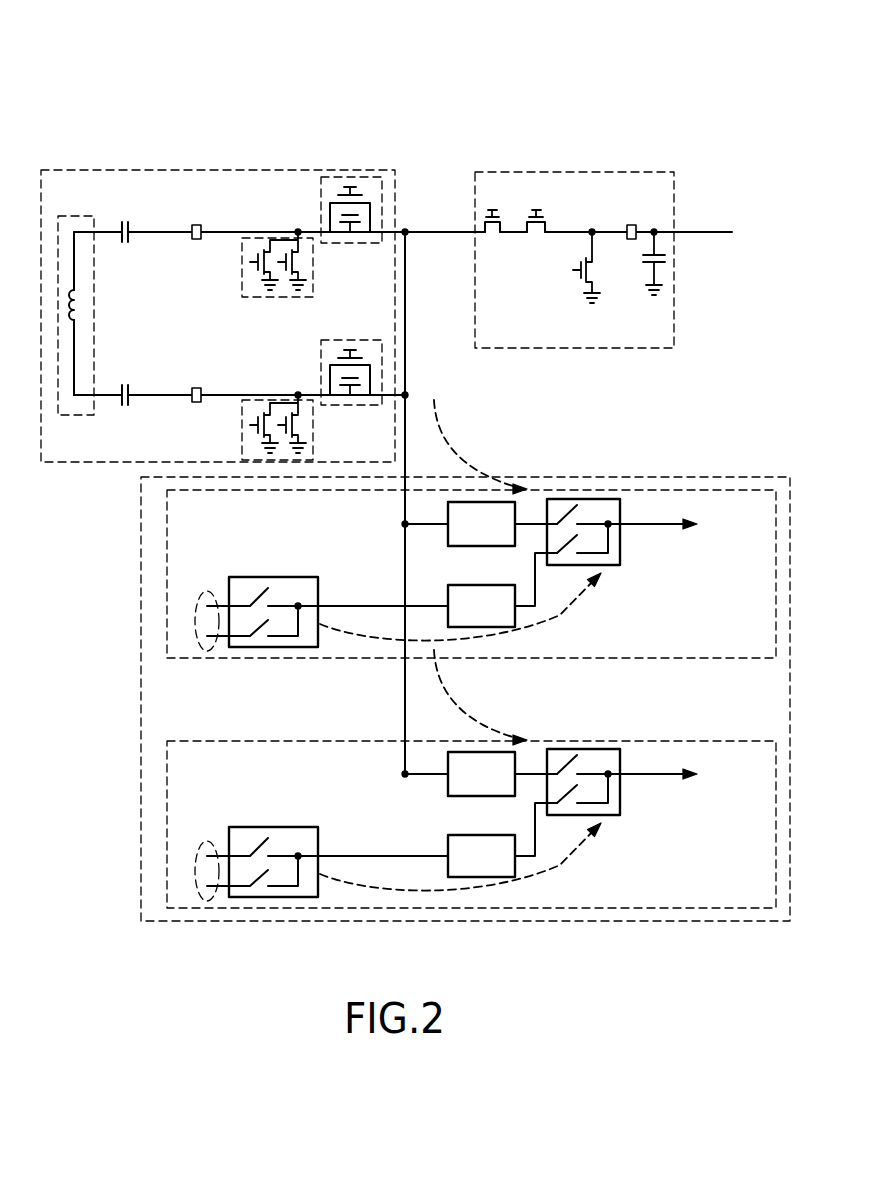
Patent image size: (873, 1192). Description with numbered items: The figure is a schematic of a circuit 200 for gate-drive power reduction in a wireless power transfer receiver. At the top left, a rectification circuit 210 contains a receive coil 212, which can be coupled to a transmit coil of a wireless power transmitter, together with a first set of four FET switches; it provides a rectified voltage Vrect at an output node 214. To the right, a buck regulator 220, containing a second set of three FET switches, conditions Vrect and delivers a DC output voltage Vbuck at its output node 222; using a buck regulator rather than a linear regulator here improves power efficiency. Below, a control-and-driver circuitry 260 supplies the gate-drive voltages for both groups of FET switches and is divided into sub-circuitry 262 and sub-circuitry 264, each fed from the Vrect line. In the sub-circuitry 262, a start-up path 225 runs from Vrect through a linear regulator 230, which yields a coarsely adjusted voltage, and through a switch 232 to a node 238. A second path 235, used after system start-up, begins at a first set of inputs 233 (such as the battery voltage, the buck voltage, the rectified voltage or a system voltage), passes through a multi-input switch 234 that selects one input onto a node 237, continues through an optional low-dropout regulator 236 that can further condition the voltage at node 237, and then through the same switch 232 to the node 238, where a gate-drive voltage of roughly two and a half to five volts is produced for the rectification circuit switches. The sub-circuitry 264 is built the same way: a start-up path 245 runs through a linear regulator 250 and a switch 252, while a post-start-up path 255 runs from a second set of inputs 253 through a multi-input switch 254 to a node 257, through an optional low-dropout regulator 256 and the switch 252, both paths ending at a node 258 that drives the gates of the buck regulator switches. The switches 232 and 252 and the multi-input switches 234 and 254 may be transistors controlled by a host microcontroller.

The circuit 200 is at (132, 86).
The rectification circuit 210 is at (265, 170).
The receive coil 212 is at (73, 216).
The output node 214 is at (426, 236).
The buck regulator 220 is at (636, 172).
The output node 222 is at (703, 235).
The path 225 is at (437, 422).
The linear regulator 230 is at (502, 524).
The switch 232 is at (620, 560).
The first set of inputs 233 is at (197, 598).
The multi-input switch 234 is at (300, 577).
The path 235 is at (572, 628).
The optional low-dropout regulator 236 is at (502, 590).
The node 237 is at (355, 604).
The node 238 is at (652, 526).
The path 245 is at (437, 673).
The linear regulator 250 is at (502, 774).
The switch 252 is at (620, 810).
The second set of inputs 253 is at (197, 848).
The multi-input switch 254 is at (305, 827).
The path 255 is at (600, 880).
The optional low-dropout regulator 256 is at (502, 840).
The node 257 is at (362, 854).
The node 258 is at (652, 775).
The control-and-driver circuitry 260 is at (644, 477).
The sub-circuitry 262 is at (718, 490).
The sub-circuitry 264 is at (718, 741).